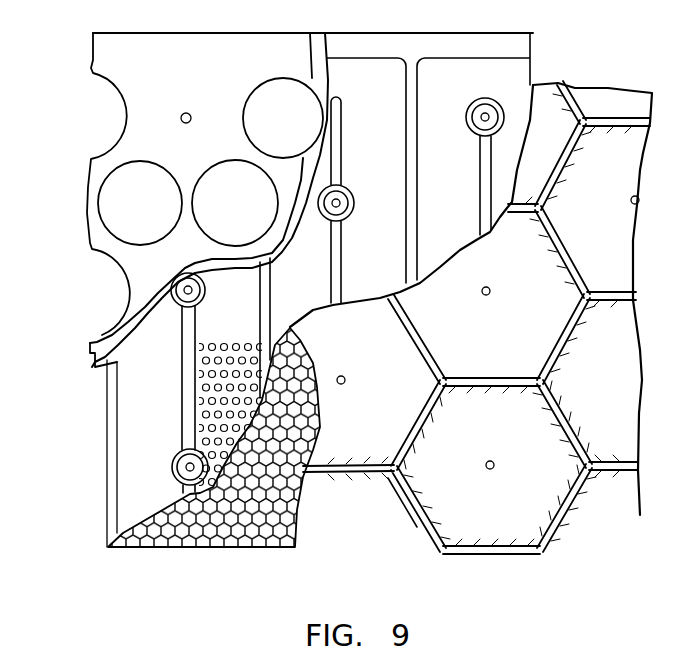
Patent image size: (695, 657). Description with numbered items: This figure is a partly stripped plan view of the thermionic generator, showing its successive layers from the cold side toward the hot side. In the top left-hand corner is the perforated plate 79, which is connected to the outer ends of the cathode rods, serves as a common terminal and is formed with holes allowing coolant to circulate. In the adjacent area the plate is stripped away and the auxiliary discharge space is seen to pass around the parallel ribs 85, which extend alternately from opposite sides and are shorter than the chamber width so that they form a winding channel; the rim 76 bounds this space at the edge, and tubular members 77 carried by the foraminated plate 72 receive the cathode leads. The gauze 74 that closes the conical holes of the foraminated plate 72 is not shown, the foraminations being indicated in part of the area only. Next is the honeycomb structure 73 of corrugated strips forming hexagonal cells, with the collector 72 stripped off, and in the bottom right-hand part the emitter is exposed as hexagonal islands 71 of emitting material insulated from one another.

The emitter 71 is at (427, 348).
The foraminated plate 72 is at (243, 335).
The honeycomb structure 73 is at (277, 527).
The fine-meshed gauze 74 is at (278, 242).
The rim 76 is at (445, 45).
The tubular members 77 is at (350, 188).
The perforated plate 79 is at (128, 87).
The ribs 85 is at (405, 110).